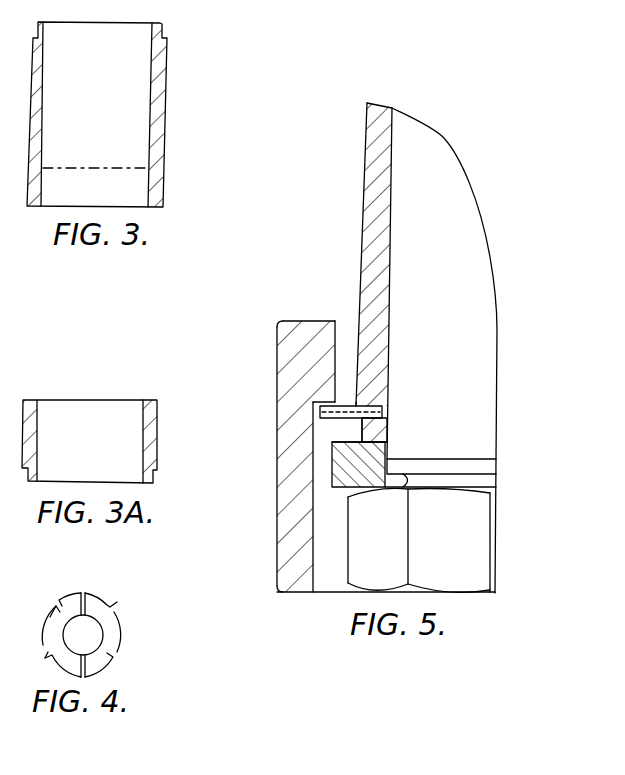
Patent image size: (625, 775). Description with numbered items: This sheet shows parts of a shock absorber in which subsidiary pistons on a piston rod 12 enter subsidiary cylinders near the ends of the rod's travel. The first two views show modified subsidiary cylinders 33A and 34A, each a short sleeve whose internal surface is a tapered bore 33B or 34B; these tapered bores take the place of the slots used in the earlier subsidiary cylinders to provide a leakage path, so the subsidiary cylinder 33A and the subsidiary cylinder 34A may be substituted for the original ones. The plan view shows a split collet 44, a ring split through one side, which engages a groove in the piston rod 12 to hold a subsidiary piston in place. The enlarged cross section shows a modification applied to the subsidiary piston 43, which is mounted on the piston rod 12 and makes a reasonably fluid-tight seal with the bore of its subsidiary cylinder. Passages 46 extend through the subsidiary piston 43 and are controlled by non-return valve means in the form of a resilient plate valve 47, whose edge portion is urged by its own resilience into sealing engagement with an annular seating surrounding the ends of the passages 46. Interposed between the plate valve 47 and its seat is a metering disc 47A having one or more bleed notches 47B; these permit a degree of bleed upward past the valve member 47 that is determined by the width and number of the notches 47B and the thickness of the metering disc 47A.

In FIG. 5, the piston rod 12 is at (400, 197).
In FIG. 3A, the subsidiary cylinder 33A is at (152, 452).
In FIG. 3A, the tapered bore 33B is at (123, 437).
In FIG. 3, the subsidiary cylinder 34A is at (164, 113).
In FIG. 3, the tapered bore 34B is at (132, 87).
In FIG. 5, the subsidiary piston 43 is at (288, 503).
In FIG. 4, the split collet 44 is at (112, 638).
In FIG. 5, the passages 46 is at (345, 323).
In FIG. 5, the resilient plate valve 47 is at (338, 428).
In FIG. 5, the metering disc 47A is at (349, 404).
In FIG. 5, the bleed notches 47B is at (328, 405).